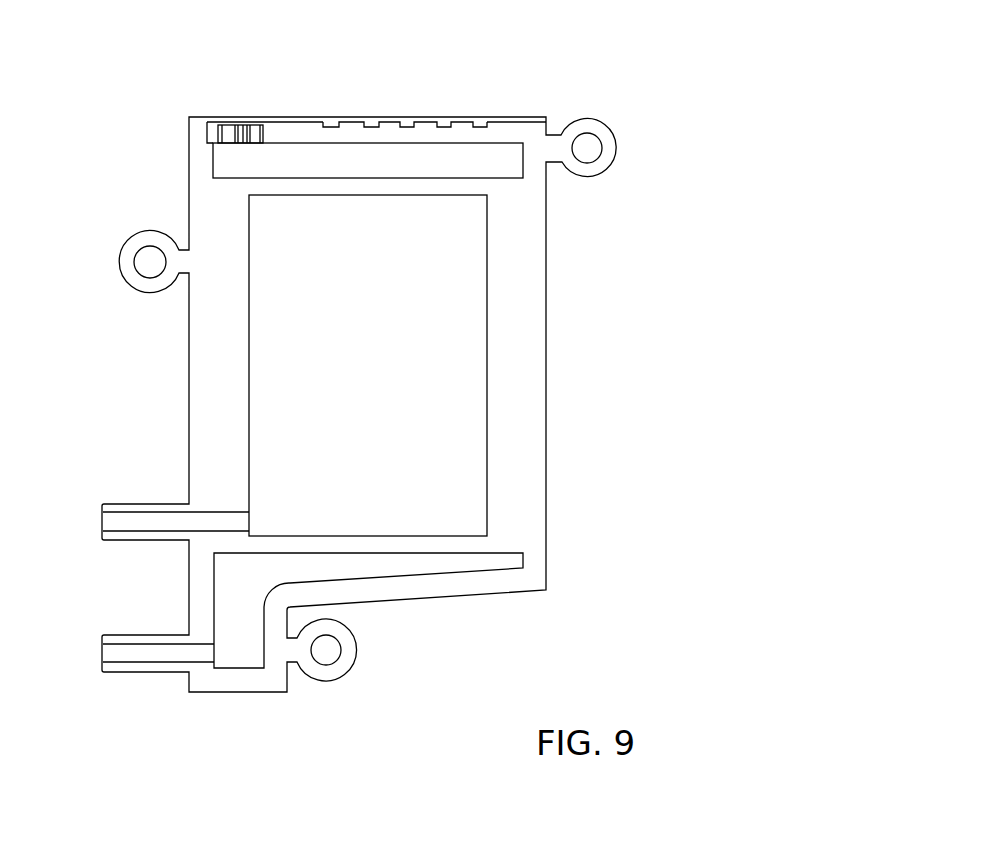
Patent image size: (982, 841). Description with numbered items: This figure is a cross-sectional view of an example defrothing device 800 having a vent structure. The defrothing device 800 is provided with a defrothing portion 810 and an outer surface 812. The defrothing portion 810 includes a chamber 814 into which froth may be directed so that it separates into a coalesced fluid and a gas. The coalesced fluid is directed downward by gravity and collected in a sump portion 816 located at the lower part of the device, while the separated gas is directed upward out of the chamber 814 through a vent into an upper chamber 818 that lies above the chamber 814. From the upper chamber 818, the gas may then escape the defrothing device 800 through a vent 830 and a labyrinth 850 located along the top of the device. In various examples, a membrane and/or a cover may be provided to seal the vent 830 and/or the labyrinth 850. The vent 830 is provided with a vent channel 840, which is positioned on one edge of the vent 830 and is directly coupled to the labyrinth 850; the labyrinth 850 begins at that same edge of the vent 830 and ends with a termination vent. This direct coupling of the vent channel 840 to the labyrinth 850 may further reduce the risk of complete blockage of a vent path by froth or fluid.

The defrothing device 800 is at (700, 178).
The defrothing portion 810 is at (202, 380).
The outer surface 812 is at (428, 118).
The chamber 814 is at (436, 387).
The sump portion 816 is at (234, 633).
The upper chamber 818 is at (484, 162).
The vent 830 is at (285, 118).
The vent channel 840 is at (220, 128).
The labyrinth 850 is at (498, 118).